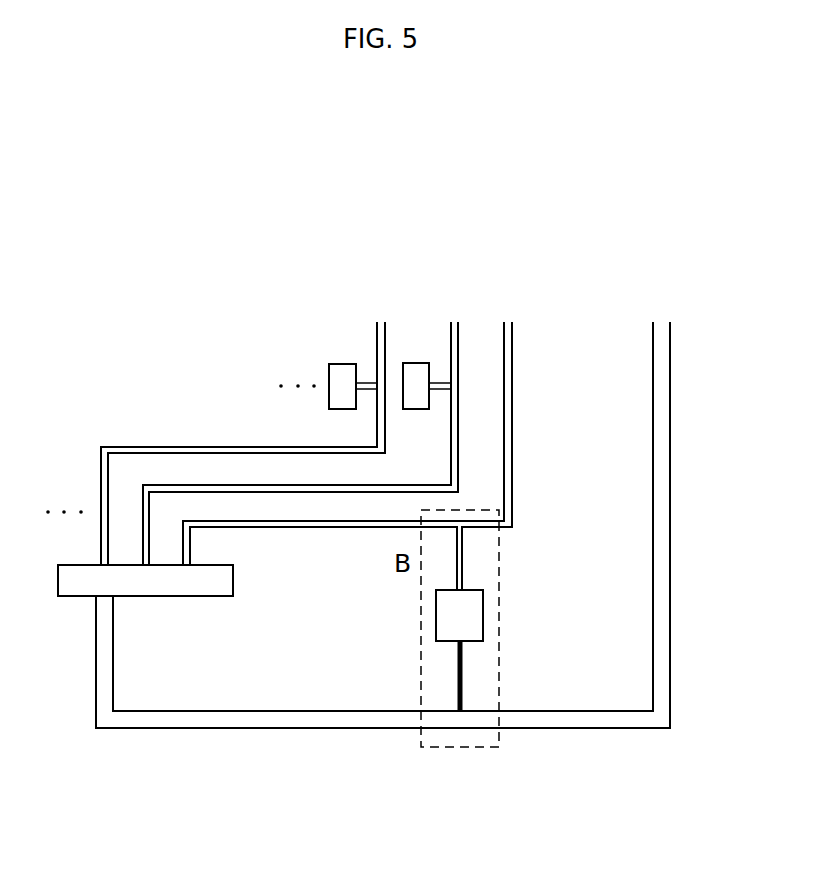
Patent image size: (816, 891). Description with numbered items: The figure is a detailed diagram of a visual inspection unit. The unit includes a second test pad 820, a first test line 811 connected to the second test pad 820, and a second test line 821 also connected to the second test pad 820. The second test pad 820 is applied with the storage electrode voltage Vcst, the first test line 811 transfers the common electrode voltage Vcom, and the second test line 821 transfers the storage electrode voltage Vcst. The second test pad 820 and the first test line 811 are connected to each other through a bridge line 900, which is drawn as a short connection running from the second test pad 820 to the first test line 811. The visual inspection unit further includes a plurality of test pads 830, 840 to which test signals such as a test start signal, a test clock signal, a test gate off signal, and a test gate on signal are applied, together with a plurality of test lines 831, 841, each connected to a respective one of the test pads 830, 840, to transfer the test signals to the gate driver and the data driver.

The first test line 811 is at (670, 648).
The second test pad 820 is at (483, 610).
The second test line 821 is at (512, 407).
The test pad 830 is at (415, 365).
The test line 831 is at (458, 337).
The test pad 840 is at (333, 363).
The test line 841 is at (385, 343).
The bridge line 900 is at (463, 672).